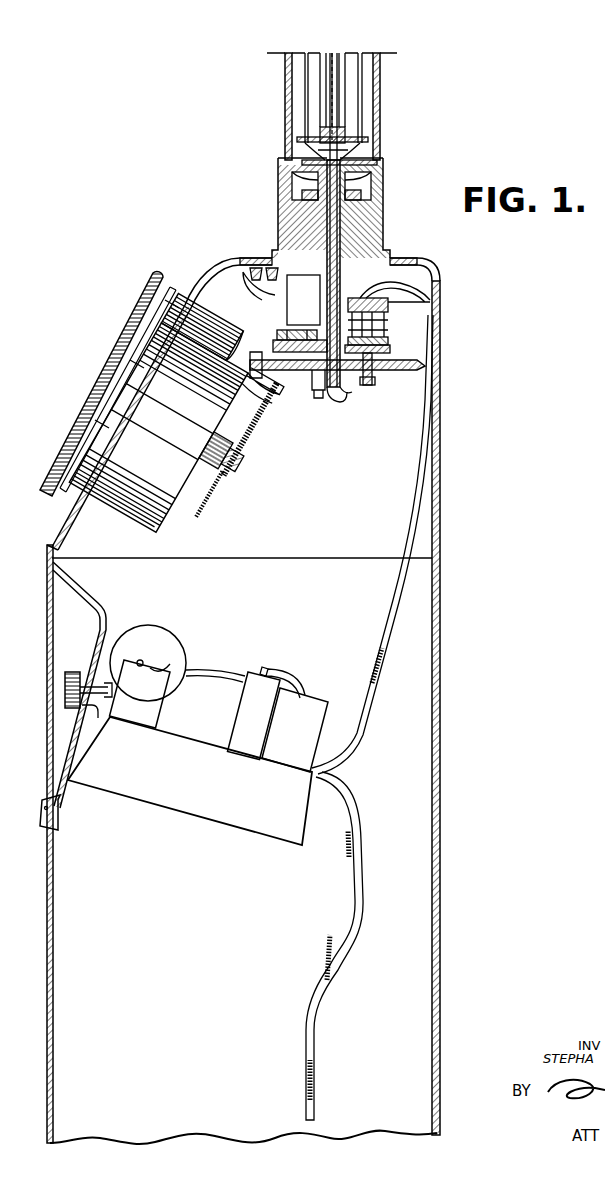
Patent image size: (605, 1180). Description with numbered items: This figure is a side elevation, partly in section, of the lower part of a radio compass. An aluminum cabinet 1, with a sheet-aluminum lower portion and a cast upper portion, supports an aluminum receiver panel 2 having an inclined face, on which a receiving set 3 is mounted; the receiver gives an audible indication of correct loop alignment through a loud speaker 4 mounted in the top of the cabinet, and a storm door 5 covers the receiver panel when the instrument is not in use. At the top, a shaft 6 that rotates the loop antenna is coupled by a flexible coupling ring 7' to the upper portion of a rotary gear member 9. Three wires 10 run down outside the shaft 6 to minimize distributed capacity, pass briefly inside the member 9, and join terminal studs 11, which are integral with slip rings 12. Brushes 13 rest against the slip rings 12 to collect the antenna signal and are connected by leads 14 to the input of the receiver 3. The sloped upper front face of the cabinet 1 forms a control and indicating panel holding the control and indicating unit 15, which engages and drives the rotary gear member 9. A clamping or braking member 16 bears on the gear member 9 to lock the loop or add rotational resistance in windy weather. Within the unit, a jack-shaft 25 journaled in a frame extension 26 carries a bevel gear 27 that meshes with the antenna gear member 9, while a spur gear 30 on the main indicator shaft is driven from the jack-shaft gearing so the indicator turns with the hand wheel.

The aluminum cabinet 1 is at (440, 636).
The receiver panel 2 is at (62, 806).
The receiving set 3 is at (271, 830).
The loud speaker 4 is at (228, 264).
The storm door 5 is at (45, 700).
The shaft 6 is at (340, 92).
The flexible coupling ring 7' is at (345, 197).
The rotary gear member 9 is at (348, 187).
The wires 10 is at (306, 112).
The terminal studs 11 is at (368, 386).
The slip rings 12 is at (283, 337).
The brushes 13 is at (373, 326).
The leads 14 is at (388, 603).
The control and indicating unit 15 is at (160, 527).
The clamping or braking member 16 is at (303, 187).
The jack-shaft 25 is at (272, 394).
The extension of frame 26 is at (258, 386).
The bevel gear 27 is at (250, 368).
The spur gear 30 is at (212, 490).